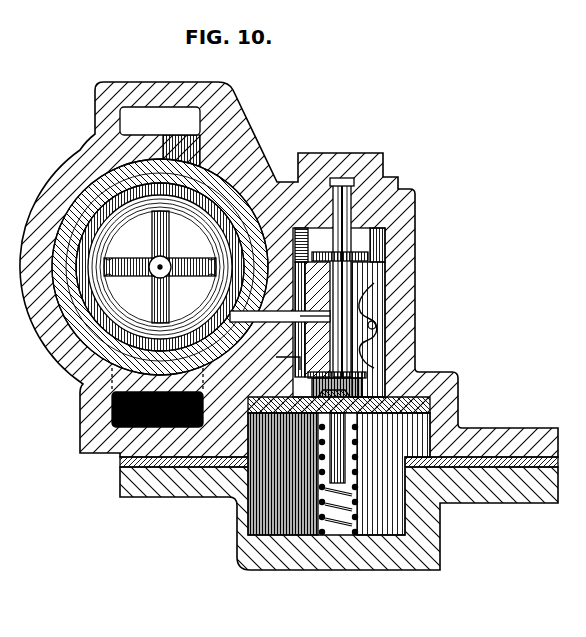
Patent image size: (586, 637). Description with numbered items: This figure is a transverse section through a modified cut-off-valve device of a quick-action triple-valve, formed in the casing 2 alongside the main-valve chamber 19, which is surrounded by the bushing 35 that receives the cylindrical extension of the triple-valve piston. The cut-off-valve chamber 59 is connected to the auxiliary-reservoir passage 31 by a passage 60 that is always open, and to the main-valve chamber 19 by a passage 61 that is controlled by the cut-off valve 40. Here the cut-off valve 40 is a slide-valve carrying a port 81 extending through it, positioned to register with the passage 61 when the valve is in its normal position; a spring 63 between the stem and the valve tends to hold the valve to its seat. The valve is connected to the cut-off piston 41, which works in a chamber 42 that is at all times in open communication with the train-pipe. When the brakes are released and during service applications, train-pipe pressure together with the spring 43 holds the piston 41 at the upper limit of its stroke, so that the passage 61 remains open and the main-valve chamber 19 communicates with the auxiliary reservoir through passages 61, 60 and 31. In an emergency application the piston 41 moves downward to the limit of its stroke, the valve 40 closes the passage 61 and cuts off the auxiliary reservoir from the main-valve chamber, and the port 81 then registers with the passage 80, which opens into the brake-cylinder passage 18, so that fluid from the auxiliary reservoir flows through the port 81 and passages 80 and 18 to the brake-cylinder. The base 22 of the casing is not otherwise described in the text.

The casing 2 is at (67, 178).
The brake-cylinder passage 18 is at (275, 357).
The main-valve chamber 19 is at (160, 267).
The base 22 is at (339, 501).
The auxiliary-reservoir passage 31 is at (160, 139).
The bushing 35 is at (160, 267).
The cut-off valve 40 is at (340, 329).
The cut-off piston 41 is at (393, 474).
The cut-off piston-chamber 42 is at (314, 474).
The spring 43 is at (349, 479).
The chamber 59 is at (339, 287).
The passage 60 is at (296, 241).
The passage 61 is at (280, 321).
The spring 63 is at (353, 325).
The passage 80 is at (307, 386).
The port 81 is at (315, 323).